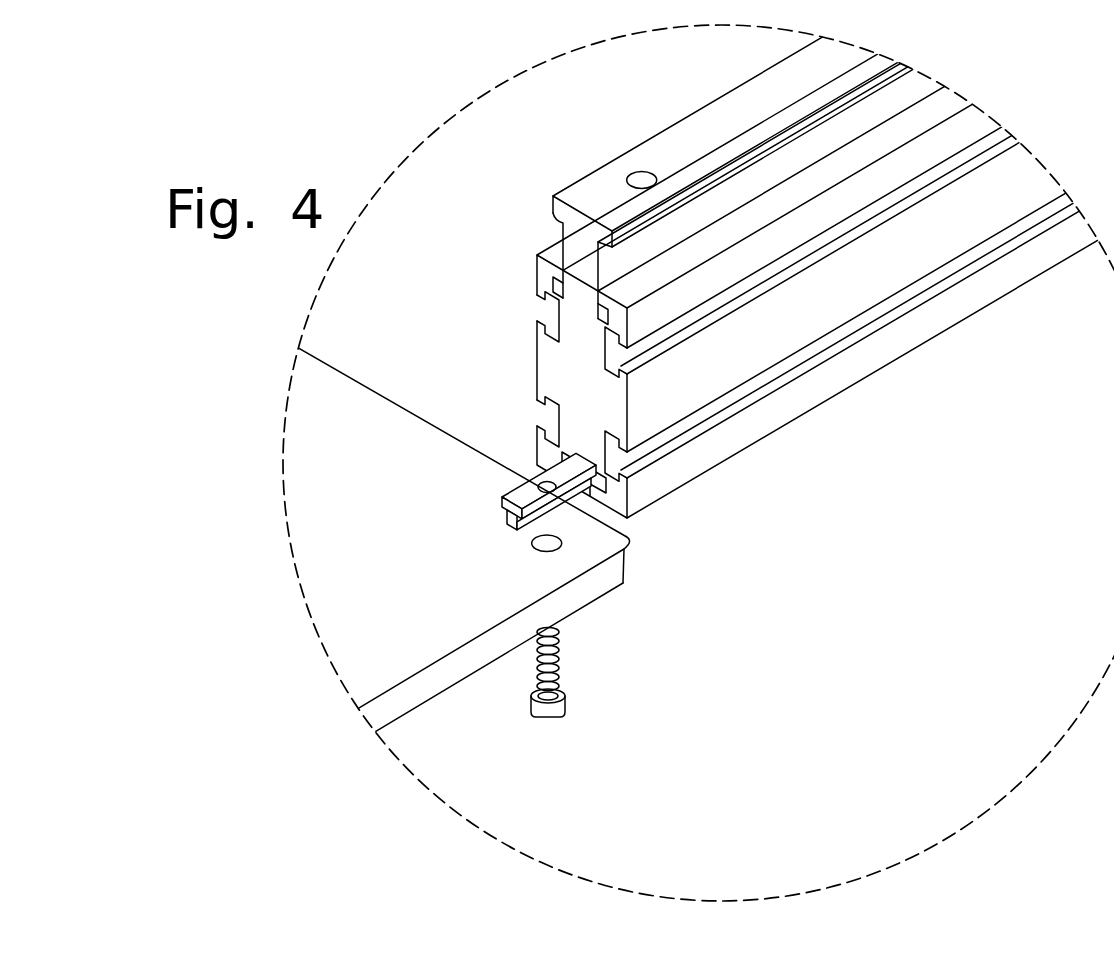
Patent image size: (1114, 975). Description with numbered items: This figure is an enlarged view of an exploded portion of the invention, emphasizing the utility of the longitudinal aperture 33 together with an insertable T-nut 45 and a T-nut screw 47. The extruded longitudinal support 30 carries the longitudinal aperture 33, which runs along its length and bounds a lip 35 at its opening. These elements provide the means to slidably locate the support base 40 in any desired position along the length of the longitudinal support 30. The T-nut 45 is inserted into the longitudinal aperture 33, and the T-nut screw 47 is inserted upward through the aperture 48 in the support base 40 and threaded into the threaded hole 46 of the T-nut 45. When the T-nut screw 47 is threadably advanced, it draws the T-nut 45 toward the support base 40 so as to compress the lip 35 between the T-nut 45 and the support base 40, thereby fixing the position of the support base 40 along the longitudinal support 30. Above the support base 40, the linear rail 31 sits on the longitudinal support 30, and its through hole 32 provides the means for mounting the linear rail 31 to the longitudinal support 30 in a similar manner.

The longitudinal support 30 is at (812, 390).
The linear rail 31 is at (580, 237).
The through hole 32 is at (641, 177).
The longitudinal aperture 33 is at (547, 412).
The lip 35 is at (593, 472).
The support base 40 is at (400, 706).
The T-nut 45 is at (517, 515).
The threaded hole 46 is at (547, 486).
The T-nut screw 47 is at (547, 715).
The aperture 48 is at (545, 543).